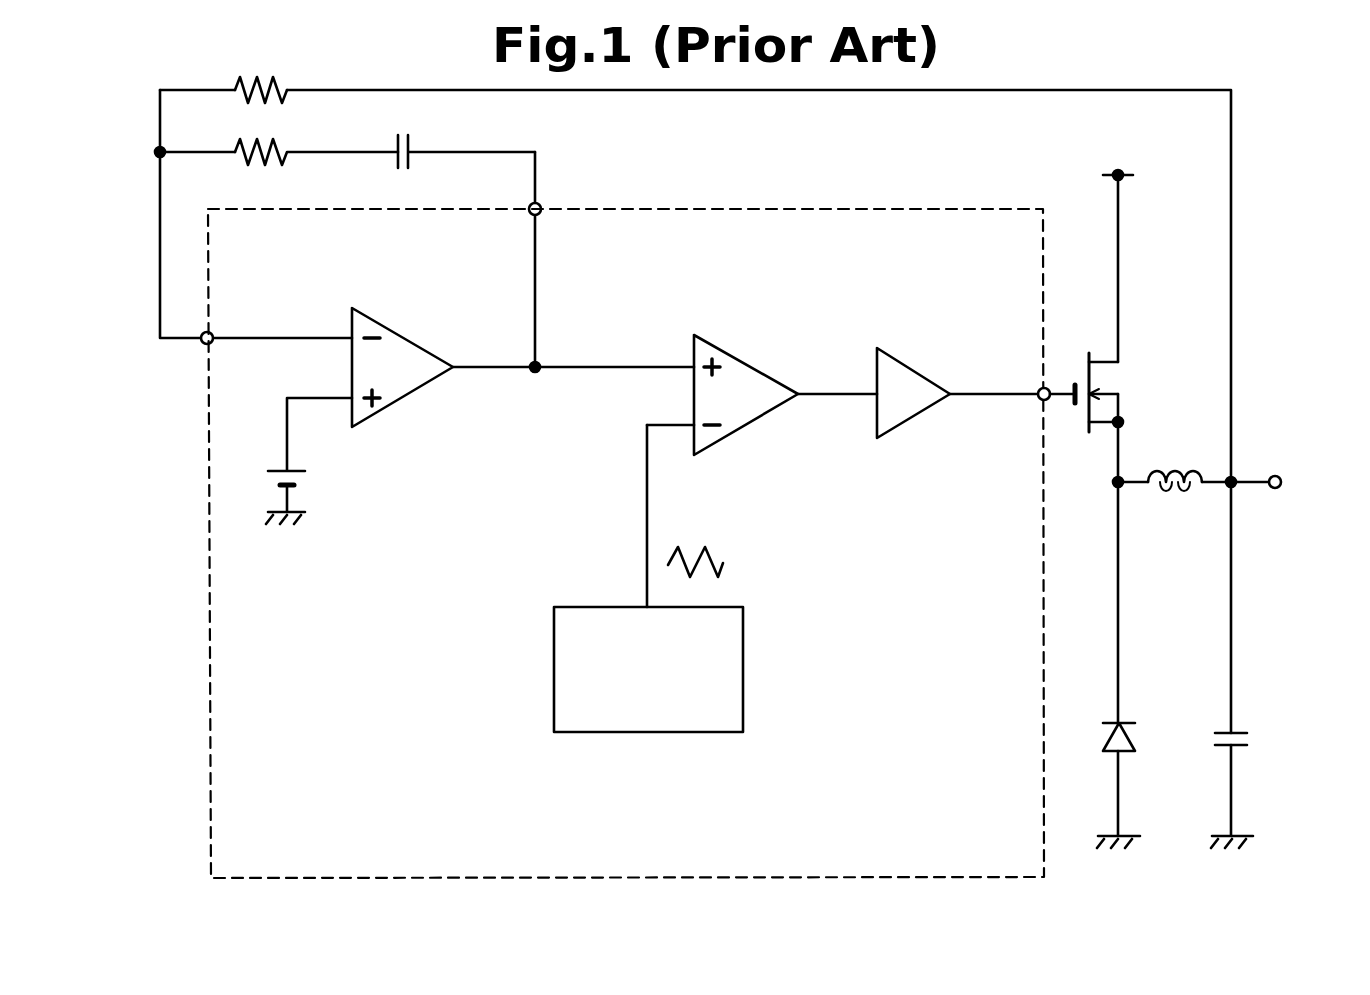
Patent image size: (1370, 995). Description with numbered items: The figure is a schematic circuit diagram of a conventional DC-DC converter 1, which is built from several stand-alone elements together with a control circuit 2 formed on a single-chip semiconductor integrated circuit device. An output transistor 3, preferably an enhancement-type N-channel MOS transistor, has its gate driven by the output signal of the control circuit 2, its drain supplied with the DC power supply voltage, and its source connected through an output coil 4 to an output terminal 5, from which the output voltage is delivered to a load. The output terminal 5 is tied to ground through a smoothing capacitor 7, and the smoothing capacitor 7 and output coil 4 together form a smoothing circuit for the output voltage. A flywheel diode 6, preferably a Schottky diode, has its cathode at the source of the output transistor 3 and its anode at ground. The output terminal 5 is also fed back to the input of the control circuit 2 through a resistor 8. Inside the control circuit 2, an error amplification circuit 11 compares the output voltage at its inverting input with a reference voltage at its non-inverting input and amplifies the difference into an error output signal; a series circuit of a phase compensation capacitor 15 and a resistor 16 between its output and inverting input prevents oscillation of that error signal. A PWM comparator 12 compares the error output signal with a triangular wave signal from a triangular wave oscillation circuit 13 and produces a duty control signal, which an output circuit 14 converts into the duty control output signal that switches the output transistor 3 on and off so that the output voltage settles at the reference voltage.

The DC-DC converter 1 is at (1300, 867).
The control circuit 2 is at (890, 209).
The output transistor 3 is at (1083, 366).
The output coil 4 is at (1182, 467).
The output terminal 5 is at (1275, 475).
The flywheel diode 6 is at (1135, 738).
The smoothing capacitor 7 is at (1247, 732).
The resistor 8 is at (262, 82).
The error amplification circuit 11 is at (405, 398).
The PWM comparator 12 is at (770, 348).
The triangular wave oscillation circuit 13 is at (743, 636).
The output circuit 14 is at (905, 420).
The phase compensation capacitor 15 is at (408, 140).
The resistor 16 is at (262, 143).